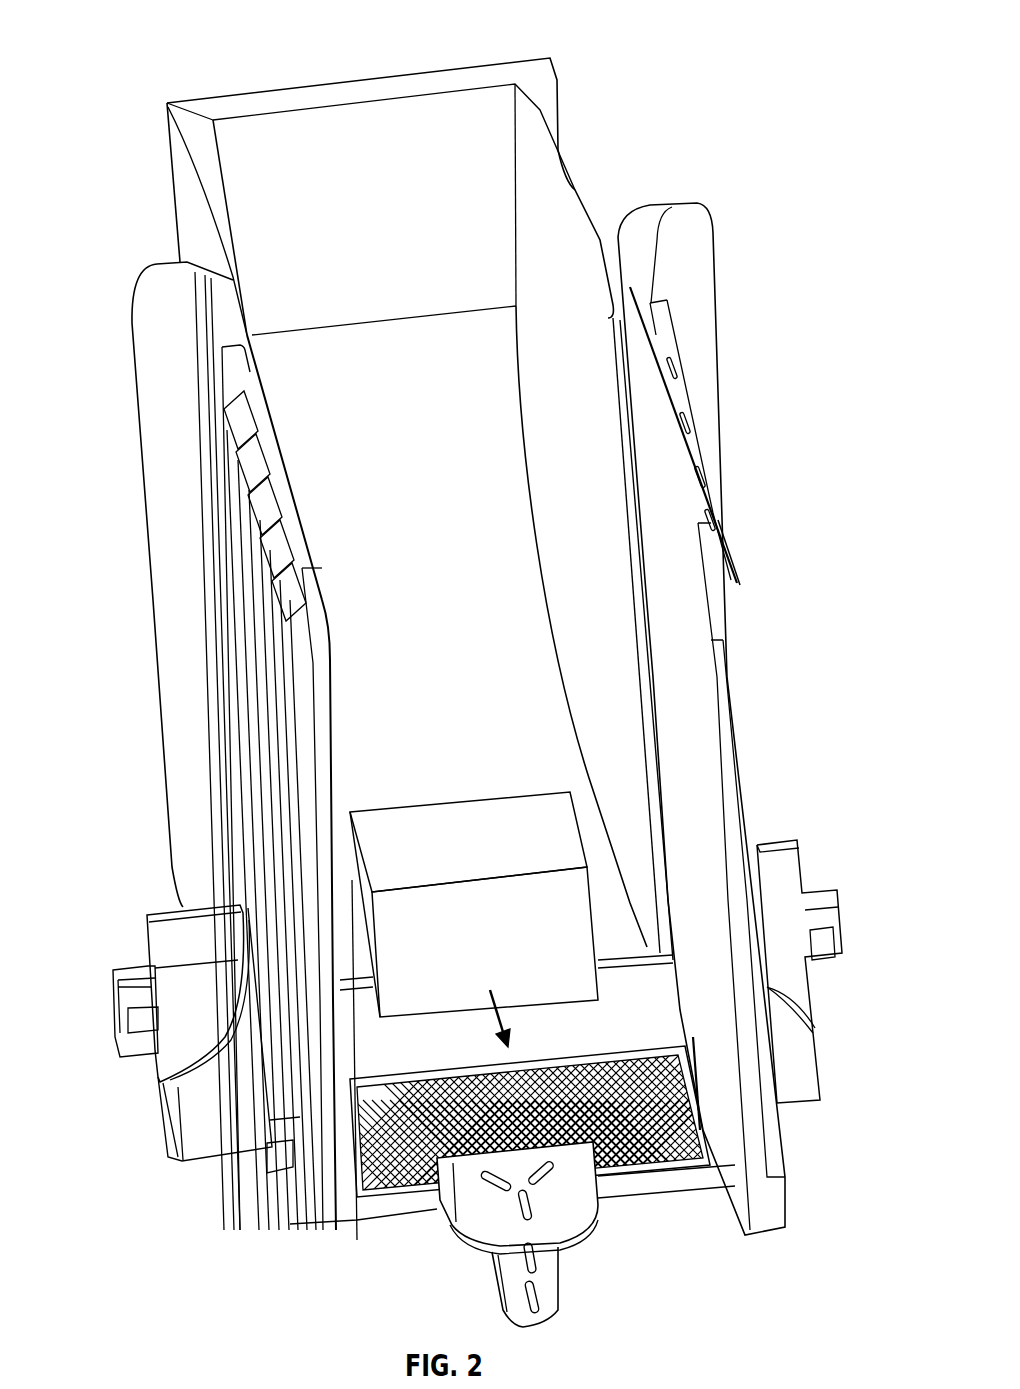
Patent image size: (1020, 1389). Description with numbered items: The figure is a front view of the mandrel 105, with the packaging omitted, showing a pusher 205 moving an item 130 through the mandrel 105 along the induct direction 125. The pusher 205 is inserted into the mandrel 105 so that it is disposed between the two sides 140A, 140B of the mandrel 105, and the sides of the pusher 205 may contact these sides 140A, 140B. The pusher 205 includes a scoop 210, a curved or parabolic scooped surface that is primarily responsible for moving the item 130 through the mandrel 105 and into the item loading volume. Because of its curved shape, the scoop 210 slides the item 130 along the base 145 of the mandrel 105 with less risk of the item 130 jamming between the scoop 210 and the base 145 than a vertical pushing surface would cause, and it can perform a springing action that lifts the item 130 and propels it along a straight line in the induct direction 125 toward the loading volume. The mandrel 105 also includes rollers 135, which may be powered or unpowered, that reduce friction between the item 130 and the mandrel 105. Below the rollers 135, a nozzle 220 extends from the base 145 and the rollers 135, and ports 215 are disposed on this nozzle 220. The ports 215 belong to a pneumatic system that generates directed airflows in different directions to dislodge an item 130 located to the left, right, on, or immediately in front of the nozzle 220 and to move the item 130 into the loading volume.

The mandrel 105 is at (169, 511).
The induct direction 125 is at (493, 1020).
The item 130 is at (463, 837).
The rollers 135 is at (633, 1165).
The side 140A is at (723, 535).
The side 140B is at (233, 618).
The base 145 is at (628, 1030).
The pusher 205 is at (182, 61).
The scoop 210 is at (372, 352).
The ports 215 is at (530, 1300).
The nozzle 220 is at (568, 1240).